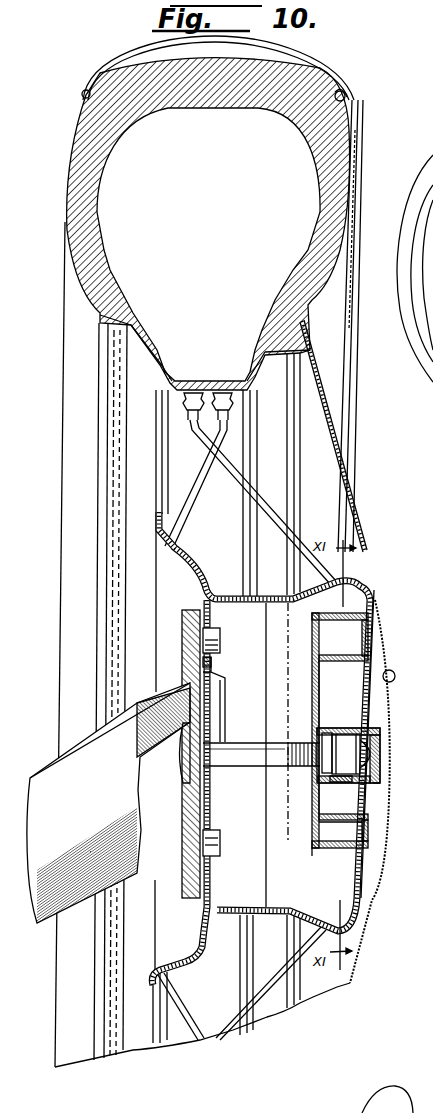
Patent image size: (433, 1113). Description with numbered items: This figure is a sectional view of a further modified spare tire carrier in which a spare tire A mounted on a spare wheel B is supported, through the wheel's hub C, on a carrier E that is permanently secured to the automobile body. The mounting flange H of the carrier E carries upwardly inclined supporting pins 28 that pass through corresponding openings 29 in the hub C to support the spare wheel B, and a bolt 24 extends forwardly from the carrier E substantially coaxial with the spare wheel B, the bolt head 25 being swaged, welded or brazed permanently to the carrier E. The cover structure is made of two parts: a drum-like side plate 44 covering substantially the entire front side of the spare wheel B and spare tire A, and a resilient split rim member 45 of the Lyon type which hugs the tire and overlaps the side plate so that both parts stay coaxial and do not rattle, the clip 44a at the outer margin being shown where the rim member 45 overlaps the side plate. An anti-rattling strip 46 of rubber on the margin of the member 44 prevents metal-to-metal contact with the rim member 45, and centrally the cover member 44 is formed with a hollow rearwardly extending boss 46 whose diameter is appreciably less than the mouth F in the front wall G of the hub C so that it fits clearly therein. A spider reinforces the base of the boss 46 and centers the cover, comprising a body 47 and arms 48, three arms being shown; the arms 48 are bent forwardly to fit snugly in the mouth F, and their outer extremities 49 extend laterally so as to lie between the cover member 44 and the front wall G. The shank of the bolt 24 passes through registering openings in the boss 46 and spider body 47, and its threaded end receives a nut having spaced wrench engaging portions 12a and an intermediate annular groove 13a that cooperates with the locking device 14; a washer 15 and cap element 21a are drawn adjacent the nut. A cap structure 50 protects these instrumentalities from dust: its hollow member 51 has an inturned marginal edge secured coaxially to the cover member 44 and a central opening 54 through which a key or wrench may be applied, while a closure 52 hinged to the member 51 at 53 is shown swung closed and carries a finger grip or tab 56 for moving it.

The spare tire A is at (67, 214).
The spare wheel B is at (214, 382).
The hub C is at (152, 533).
The carrier E is at (48, 775).
The mounting flange H is at (190, 610).
The front opening (mouth) F is at (356, 868).
The front wall G is at (356, 902).
The split rim member 45 is at (292, 66).
The cover clip 44a is at (345, 95).
The side plate (cover member) 44 is at (365, 470).
The outer extremities of the arms 49 is at (368, 586).
The supporting pins 28 is at (216, 650).
The openings 29 is at (214, 672).
The bolt 24 is at (258, 742).
The bolt head 25 is at (181, 764).
The arms 48 is at (312, 638).
The spider body 47 is at (312, 726).
The wrench engaging portions 12a is at (326, 733).
The annular groove 13a is at (346, 734).
The lock washer 15 is at (338, 785).
The cap 21a is at (378, 796).
The locking device 14 is at (338, 828).
The boss (anti-rattling strip) 46 is at (320, 856).
The hollow member 51 is at (380, 613).
The cap structure 50 is at (390, 650).
The hinge 53 is at (395, 673).
The closure 52 is at (390, 694).
The central opening 54 is at (388, 712).
The finger grip (tab) 56 is at (393, 856).